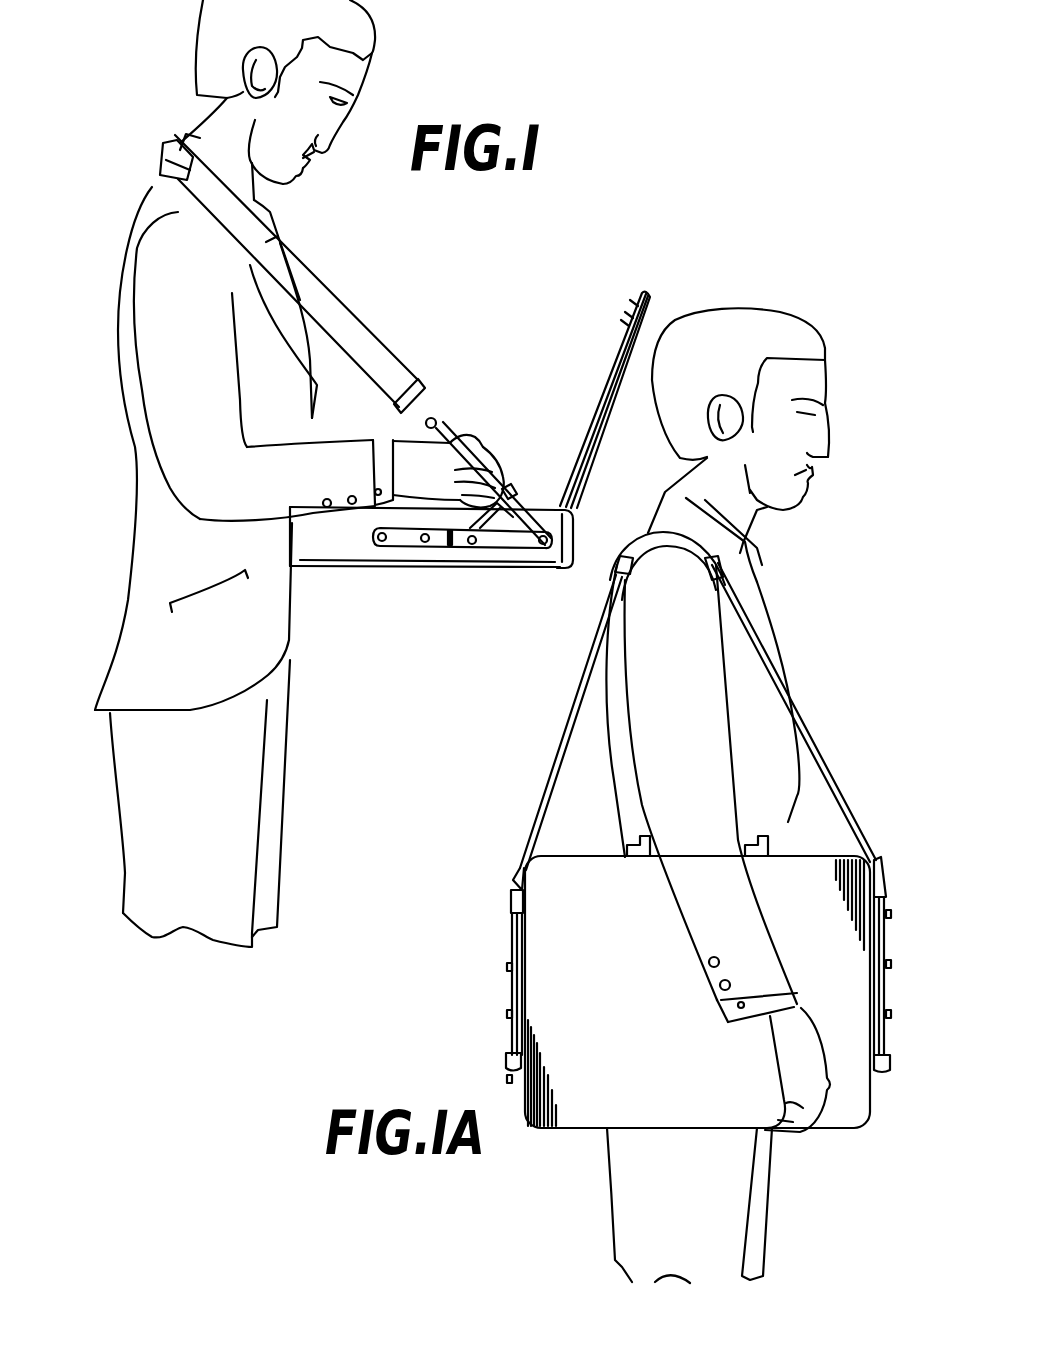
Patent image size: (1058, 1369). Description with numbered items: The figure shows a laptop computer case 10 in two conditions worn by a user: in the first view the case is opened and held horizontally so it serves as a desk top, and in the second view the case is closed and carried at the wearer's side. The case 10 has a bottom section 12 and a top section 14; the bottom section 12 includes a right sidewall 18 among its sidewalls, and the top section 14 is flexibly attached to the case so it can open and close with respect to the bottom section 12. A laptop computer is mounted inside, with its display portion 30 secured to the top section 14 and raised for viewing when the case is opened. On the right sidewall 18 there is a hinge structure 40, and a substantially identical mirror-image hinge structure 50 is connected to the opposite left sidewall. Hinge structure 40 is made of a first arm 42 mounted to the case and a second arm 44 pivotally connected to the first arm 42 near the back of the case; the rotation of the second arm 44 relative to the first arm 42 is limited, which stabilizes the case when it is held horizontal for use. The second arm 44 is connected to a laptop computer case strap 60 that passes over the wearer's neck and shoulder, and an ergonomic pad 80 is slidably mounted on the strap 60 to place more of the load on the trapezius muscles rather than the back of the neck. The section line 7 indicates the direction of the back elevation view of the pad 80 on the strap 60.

In FIG. 1, the section line 7- 7 is at (140, 108).
In FIG. 1, the laptop computer case 10 is at (431, 579).
In FIG. 1A, the laptop computer case 10 is at (834, 1146).
In FIG. 1, the bottom section 12 is at (437, 568).
In FIG. 1, the top section 14 is at (617, 379).
In FIG. 1A, the top section 14 is at (560, 1130).
In FIG. 1, the right sidewall 18 is at (548, 565).
In FIG. 1, the display portion 30 is at (594, 396).
In FIG. 1, the hinge structure 40 is at (509, 556).
In FIG. 1A, the hinge structure 40 is at (502, 995).
In FIG. 1, the first arm 42 is at (398, 548).
In FIG. 1, the second arm 44 is at (448, 430).
In FIG. 1A, the hinge structure 50 is at (893, 982).
In FIG. 1, the laptop computer case strap 60 is at (336, 306).
In FIG. 1A, the laptop computer case strap 60 is at (832, 768).
In FIG. 1, the ergonomic pad 80 is at (155, 173).
In FIG. 1A, the ergonomic pad 80 is at (657, 533).